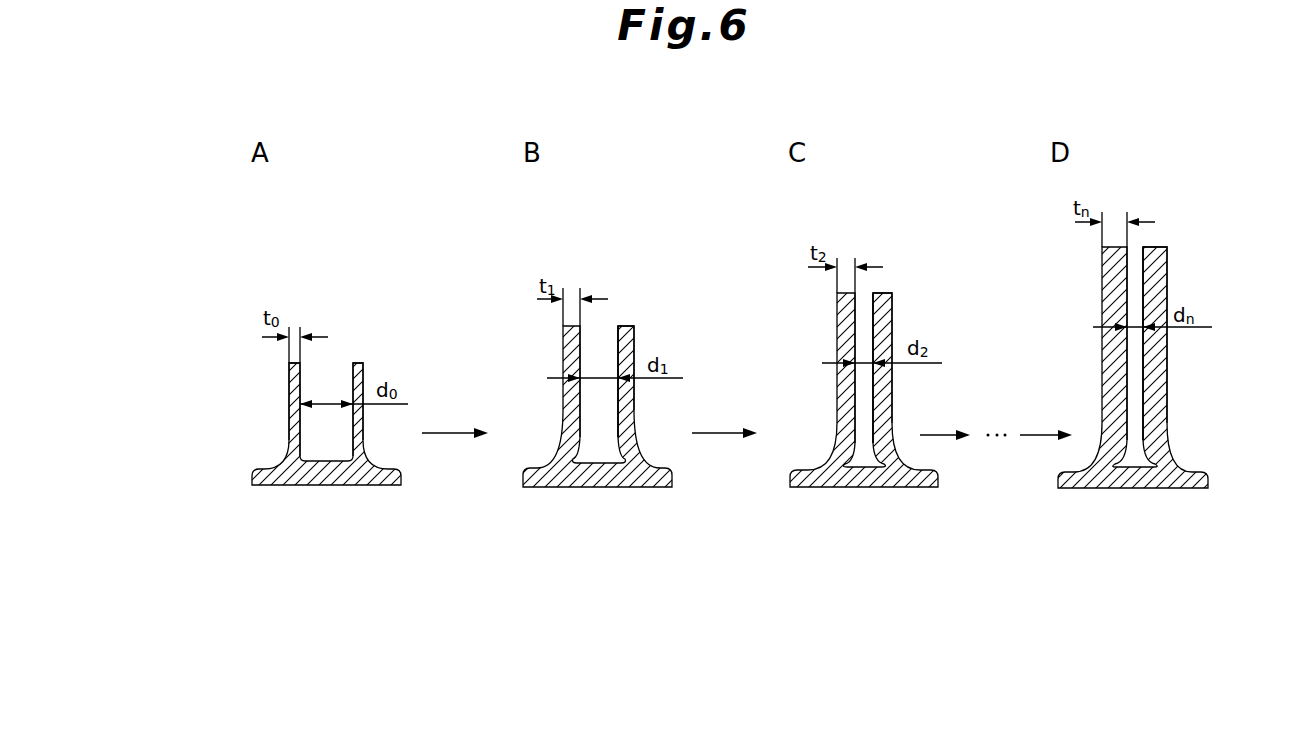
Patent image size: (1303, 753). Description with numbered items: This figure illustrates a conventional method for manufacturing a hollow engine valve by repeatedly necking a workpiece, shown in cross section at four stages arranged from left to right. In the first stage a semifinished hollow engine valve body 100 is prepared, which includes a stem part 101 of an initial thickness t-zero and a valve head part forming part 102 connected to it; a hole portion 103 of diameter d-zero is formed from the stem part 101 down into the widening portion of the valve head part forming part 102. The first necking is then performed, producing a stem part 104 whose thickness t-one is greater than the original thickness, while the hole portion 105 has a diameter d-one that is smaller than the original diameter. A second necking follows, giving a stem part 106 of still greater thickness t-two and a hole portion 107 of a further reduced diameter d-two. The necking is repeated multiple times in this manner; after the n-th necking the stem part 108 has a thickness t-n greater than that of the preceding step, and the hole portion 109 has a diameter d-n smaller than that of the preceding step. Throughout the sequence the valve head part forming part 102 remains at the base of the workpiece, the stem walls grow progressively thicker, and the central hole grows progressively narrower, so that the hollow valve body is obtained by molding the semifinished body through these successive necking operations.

The semifinished hollow engine valve body 100 is at (208, 320).
The stem part 101 is at (297, 394).
The valve head part forming part 102 is at (275, 472).
The hole portion 103 is at (353, 380).
The stem part 104 is at (628, 400).
The hole portion 105 is at (615, 340).
The stem part 106 is at (887, 390).
The hole portion 107 is at (872, 340).
The stem part 108 is at (1158, 382).
The hole portion 109 is at (1145, 298).